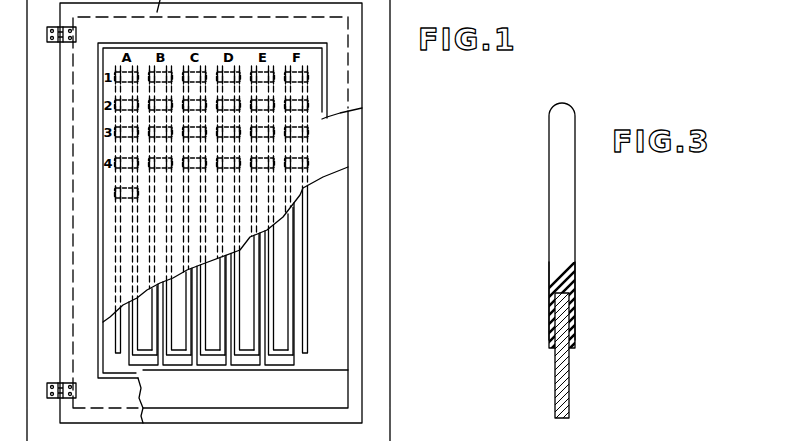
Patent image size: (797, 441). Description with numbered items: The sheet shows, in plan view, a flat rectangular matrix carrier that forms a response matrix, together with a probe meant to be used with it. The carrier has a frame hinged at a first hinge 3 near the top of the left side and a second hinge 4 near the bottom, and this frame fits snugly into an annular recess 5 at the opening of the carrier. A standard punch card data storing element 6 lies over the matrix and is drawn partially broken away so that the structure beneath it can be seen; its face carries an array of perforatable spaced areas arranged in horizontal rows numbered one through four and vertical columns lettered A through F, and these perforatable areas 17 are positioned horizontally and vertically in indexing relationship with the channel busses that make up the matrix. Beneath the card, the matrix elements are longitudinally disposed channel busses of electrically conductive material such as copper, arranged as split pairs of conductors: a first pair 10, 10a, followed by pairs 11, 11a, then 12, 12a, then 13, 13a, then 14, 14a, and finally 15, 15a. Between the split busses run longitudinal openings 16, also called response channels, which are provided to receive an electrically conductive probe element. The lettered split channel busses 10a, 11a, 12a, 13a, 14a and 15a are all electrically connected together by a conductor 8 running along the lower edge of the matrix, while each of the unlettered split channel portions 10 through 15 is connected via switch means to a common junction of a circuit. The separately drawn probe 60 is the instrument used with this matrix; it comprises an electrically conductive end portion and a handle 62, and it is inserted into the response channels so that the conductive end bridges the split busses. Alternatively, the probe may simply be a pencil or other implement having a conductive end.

In FIG. 1, the hinge 3 is at (57, 42).
In FIG. 1, the hinge 4 is at (56, 383).
In FIG. 1, the annular recess 5 is at (359, 203).
In FIG. 1, the punch card data storing element 6 is at (340, 157).
In FIG. 3, the punch card data storing element 6 is at (562, 364).
In FIG. 1, the conductor 8 is at (200, 372).
In FIG. 1, the split channel bus conductor 10 is at (118, 323).
In FIG. 1, the split channel bus conductor 10a is at (135, 352).
In FIG. 1, the split channel bus conductor 11 is at (149, 334).
In FIG. 1, the split channel bus conductor 11a is at (169, 352).
In FIG. 1, the split channel bus conductor 12 is at (183, 334).
In FIG. 1, the split channel bus conductor 12a is at (203, 352).
In FIG. 1, the split channel bus conductor 13 is at (217, 334).
In FIG. 1, the split channel bus conductor 13a is at (237, 352).
In FIG. 1, the split channel bus conductor 14 is at (251, 334).
In FIG. 1, the split channel bus conductor 14a is at (271, 352).
In FIG. 1, the split channel bus conductor 15 is at (285, 334).
In FIG. 1, the split channel bus conductor 15a is at (303, 354).
In FIG. 1, the longitudinal openings 16 is at (262, 274).
In FIG. 1, the perforatable areas 17 is at (290, 141).
In FIG. 3, the probe 60 is at (543, 261).
In FIG. 3, the handle 62 is at (566, 255).